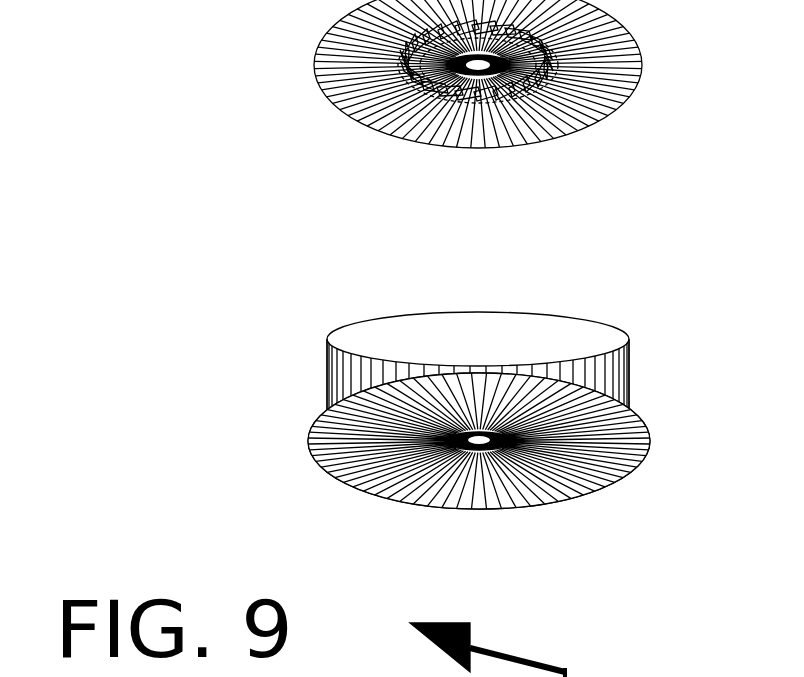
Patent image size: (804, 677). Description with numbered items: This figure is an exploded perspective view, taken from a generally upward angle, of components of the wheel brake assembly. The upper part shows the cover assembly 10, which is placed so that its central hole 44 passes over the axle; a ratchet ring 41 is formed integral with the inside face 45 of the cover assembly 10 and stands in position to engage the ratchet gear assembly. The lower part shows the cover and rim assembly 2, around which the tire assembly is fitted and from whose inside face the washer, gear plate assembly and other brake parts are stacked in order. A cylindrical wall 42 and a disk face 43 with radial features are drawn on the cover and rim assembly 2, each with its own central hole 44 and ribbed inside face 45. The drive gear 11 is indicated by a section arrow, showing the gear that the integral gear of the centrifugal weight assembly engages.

The cover and rim assembly 2 is at (327, 462).
The cover assembly 10 is at (322, 80).
The drive gear 11 is at (487, 625).
The ratchet ring 41 is at (537, 88).
The cylindrical wall 42 is at (608, 357).
The disk face 43 is at (650, 422).
The hole 44 is at (476, 70).
The inside face 45 is at (514, 122).